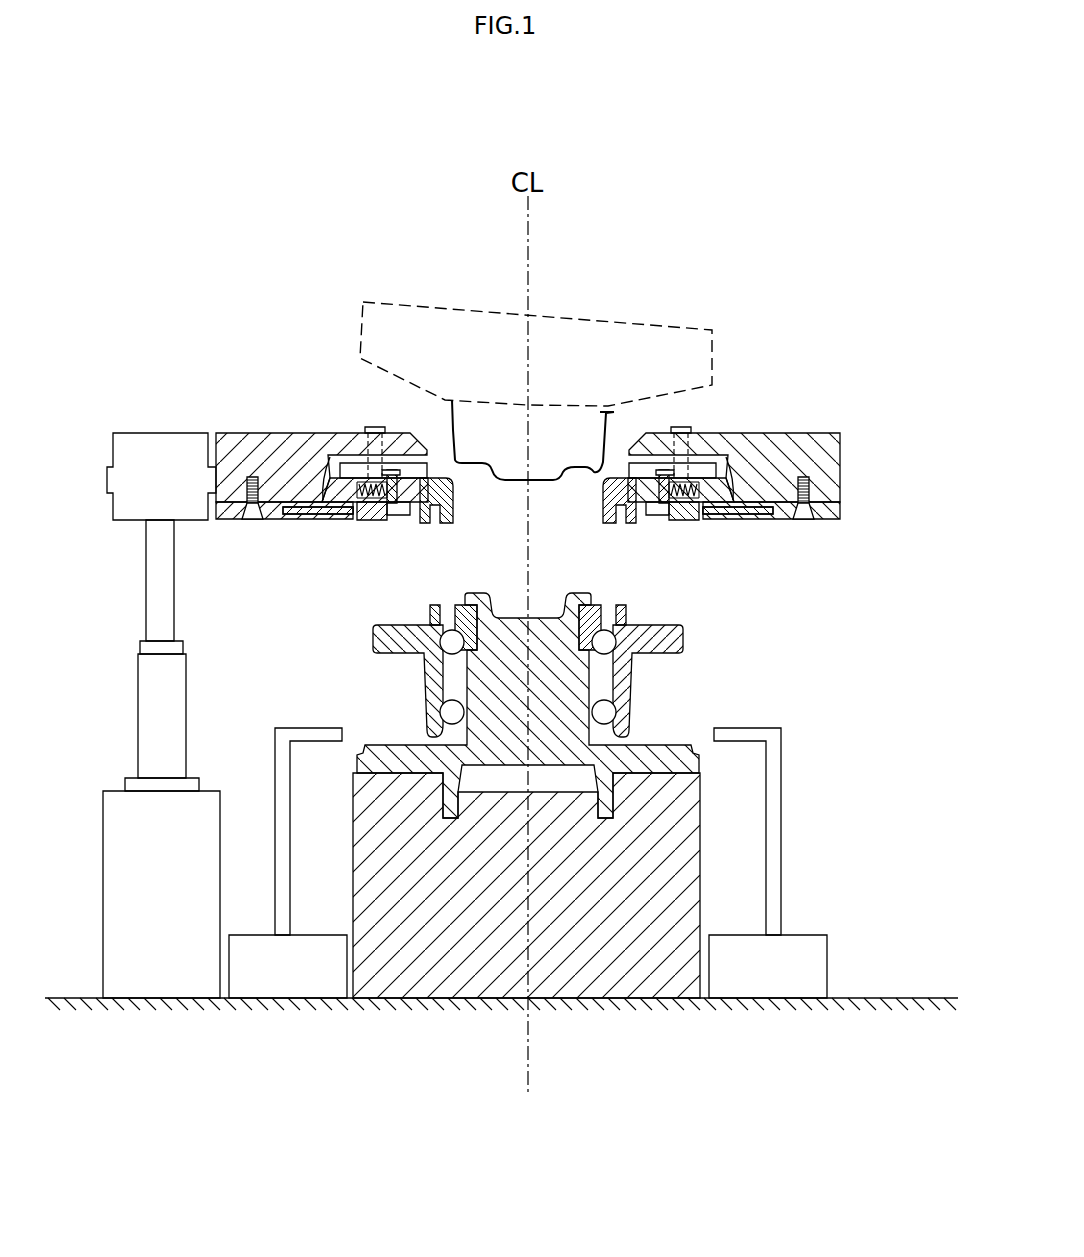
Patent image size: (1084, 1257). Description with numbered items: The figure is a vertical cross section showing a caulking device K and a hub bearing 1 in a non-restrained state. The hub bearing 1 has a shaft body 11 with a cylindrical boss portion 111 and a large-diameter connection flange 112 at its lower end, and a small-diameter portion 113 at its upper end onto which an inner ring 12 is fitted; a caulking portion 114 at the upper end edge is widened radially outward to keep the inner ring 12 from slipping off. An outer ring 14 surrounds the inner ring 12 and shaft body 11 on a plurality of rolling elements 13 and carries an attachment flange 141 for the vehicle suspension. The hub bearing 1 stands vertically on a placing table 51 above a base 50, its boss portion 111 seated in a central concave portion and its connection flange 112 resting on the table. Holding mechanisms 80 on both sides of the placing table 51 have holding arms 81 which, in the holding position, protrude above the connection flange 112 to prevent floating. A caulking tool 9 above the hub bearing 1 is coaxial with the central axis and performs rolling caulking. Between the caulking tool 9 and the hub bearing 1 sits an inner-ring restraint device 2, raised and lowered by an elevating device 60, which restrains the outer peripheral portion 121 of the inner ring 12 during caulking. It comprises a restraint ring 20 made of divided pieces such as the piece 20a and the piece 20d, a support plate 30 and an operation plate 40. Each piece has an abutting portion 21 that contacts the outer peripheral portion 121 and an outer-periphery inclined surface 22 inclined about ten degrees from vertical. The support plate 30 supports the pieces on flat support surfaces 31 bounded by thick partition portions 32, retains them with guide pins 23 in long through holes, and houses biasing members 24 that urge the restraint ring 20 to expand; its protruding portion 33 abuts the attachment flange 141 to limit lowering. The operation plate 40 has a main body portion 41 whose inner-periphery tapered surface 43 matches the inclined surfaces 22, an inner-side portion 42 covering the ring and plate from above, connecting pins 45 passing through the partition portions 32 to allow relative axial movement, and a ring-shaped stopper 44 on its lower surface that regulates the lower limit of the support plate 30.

The hub bearing 1 is at (550, 675).
The inner-ring restraint device 2 is at (515, 413).
The caulking tool 9 is at (567, 312).
The shaft body 11 is at (551, 617).
The inner ring 12 is at (455, 605).
The rolling elements 13 is at (449, 645).
The outer ring 14 is at (427, 690).
The restraint ring 20 is at (526, 353).
The piece 20a is at (606, 473).
The piece 20d is at (478, 448).
The abutting portion 21 is at (457, 516).
The outer-periphery inclined surface 22 is at (312, 496).
The guide pin 23 is at (368, 474).
The biasing member 24 is at (352, 476).
The support plate 30 is at (529, 470).
The support surface 31 is at (415, 477).
The partition portion 32 is at (350, 472).
The protruding portion 33 is at (418, 516).
The operation plate 40 is at (233, 433).
The main body portion 41 is at (215, 442).
The inner-side portion 42 is at (398, 466).
The inner-periphery tapered surface 43 is at (333, 480).
The stopper 44 is at (330, 515).
The connecting pin 45 is at (378, 428).
The base 50 is at (900, 996).
The placing table 51 is at (358, 802).
The elevating device 60 is at (138, 665).
The holding mechanism 80 is at (283, 976).
The holding arm 81 is at (275, 738).
The boss portion 111 is at (650, 775).
The connection flange 112 is at (697, 752).
The small-diameter portion 113 is at (457, 527).
The caulking portion 114 is at (488, 591).
The outer peripheral portion 121 is at (432, 607).
The attachment flange 141 is at (376, 634).
The caulking device K is at (275, 300).